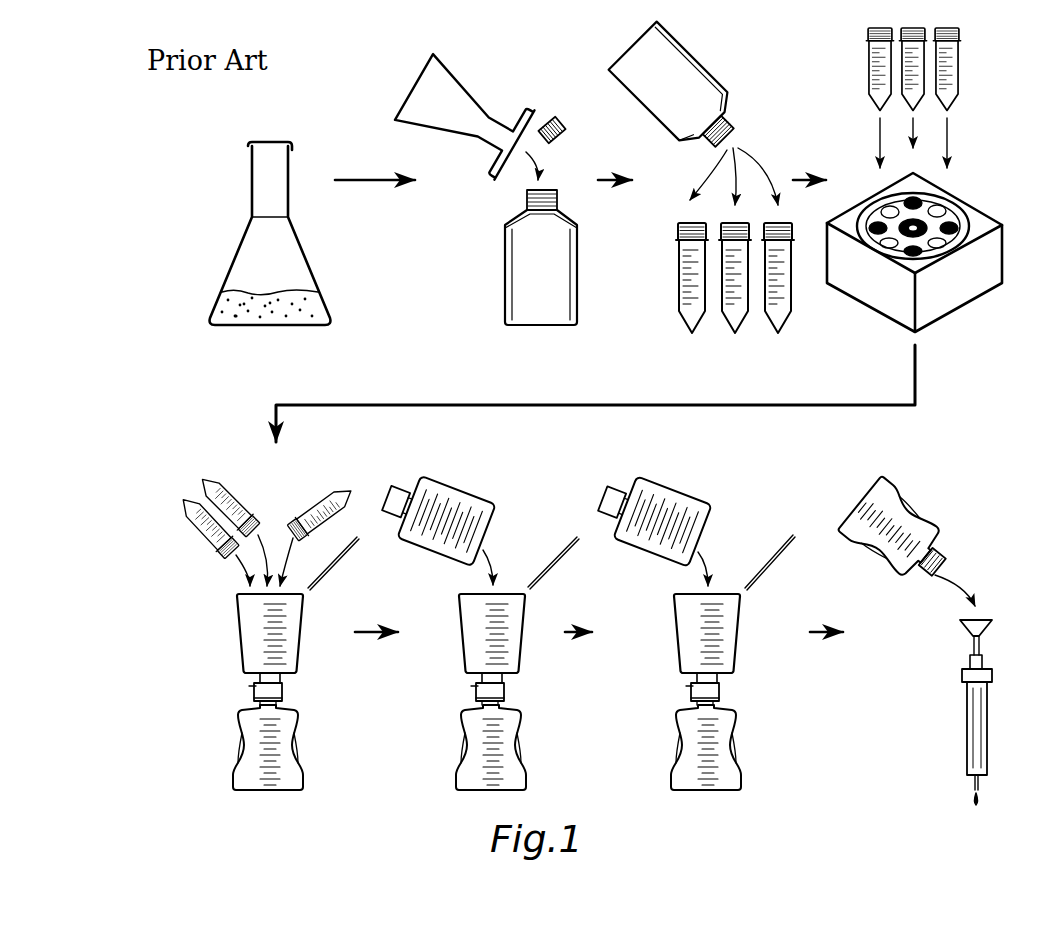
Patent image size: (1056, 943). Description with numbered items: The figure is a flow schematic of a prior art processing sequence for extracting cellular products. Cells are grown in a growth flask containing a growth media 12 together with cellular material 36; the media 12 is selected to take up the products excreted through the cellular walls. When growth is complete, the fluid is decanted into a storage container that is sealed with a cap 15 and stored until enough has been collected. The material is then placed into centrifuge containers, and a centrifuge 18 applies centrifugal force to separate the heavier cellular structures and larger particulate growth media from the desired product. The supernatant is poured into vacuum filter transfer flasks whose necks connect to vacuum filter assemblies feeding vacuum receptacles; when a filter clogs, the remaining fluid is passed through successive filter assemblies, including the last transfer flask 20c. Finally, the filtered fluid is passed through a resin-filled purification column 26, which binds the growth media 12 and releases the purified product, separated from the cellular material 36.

The growth media 12 is at (245, 293).
The cap 15 is at (555, 114).
The centrifuge 18 is at (952, 292).
The vacuum filter transfer flask 20c is at (740, 627).
The purification column 26 is at (955, 725).
The cellular material 36 is at (230, 320).